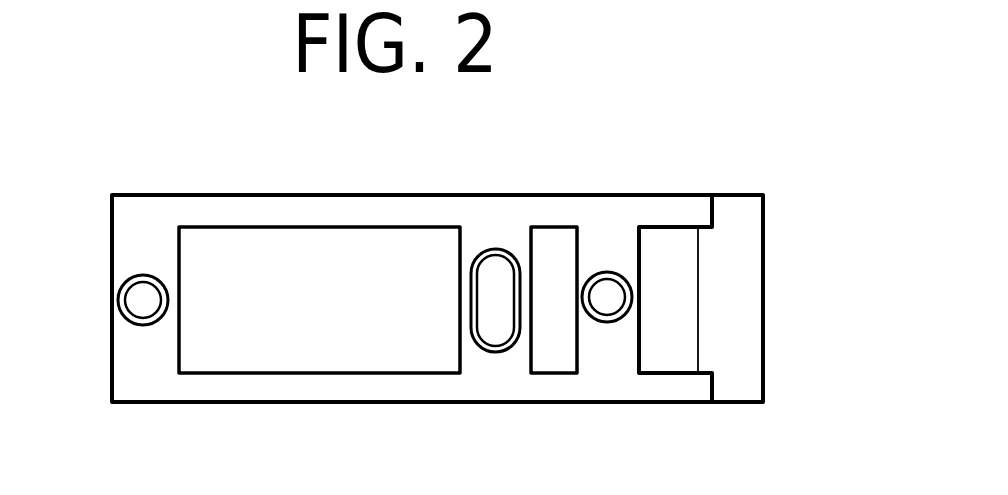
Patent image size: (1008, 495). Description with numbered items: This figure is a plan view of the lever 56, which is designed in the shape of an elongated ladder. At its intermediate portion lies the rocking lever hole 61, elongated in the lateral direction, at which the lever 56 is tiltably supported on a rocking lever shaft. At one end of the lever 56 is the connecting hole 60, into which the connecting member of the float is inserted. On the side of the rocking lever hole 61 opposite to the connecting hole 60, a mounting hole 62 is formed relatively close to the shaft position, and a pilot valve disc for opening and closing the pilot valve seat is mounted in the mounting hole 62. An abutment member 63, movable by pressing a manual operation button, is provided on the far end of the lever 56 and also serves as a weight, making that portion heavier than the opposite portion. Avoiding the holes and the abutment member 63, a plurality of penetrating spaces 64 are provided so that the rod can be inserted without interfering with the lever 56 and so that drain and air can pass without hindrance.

The lever 56 is at (403, 193).
The connecting hole 60 is at (140, 306).
The rocking lever hole 61 is at (496, 345).
The mounting hole 62 is at (611, 312).
The abutment member 63 is at (754, 290).
The penetrating spaces 64 is at (357, 368).